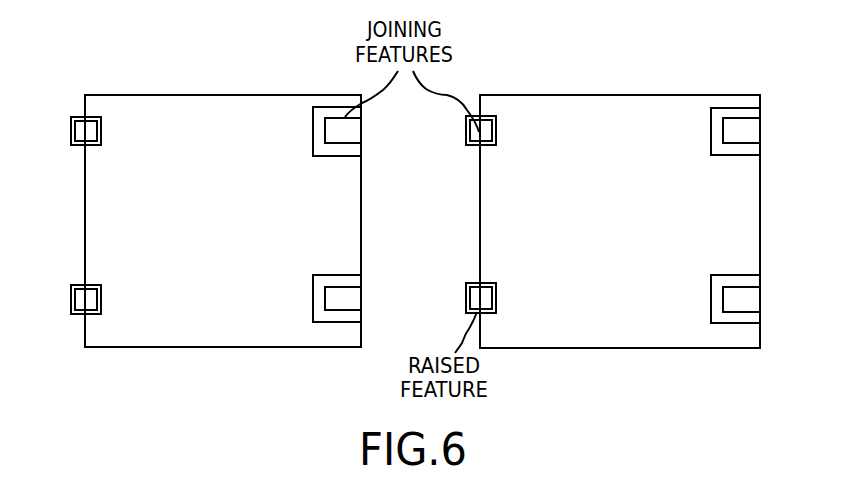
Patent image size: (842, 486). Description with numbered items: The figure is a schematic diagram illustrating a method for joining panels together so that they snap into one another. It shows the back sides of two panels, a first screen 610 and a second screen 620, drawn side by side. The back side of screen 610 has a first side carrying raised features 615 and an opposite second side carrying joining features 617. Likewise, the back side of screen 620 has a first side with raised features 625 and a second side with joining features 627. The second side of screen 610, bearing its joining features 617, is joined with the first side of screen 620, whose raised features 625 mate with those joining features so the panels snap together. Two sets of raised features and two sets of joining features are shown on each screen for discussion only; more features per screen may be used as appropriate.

The screen 610 is at (79, 390).
The screen 620 is at (708, 365).
The raised features 615 is at (80, 285).
The joining features 617 is at (353, 298).
The raised features 625 is at (482, 130).
The joining features 627 is at (745, 298).